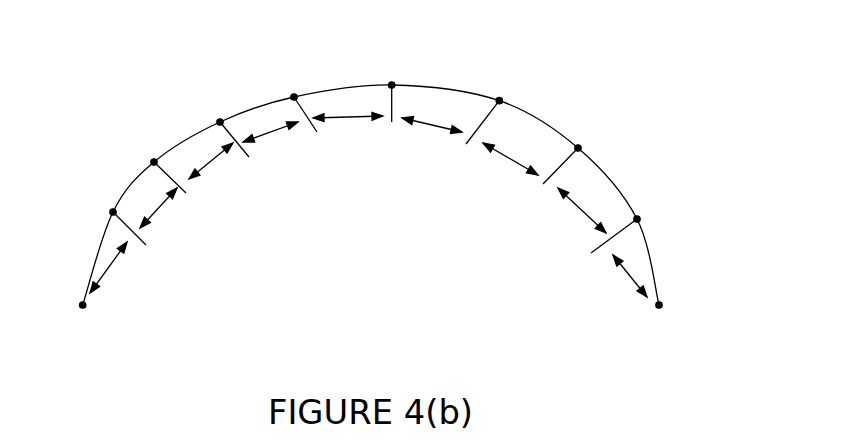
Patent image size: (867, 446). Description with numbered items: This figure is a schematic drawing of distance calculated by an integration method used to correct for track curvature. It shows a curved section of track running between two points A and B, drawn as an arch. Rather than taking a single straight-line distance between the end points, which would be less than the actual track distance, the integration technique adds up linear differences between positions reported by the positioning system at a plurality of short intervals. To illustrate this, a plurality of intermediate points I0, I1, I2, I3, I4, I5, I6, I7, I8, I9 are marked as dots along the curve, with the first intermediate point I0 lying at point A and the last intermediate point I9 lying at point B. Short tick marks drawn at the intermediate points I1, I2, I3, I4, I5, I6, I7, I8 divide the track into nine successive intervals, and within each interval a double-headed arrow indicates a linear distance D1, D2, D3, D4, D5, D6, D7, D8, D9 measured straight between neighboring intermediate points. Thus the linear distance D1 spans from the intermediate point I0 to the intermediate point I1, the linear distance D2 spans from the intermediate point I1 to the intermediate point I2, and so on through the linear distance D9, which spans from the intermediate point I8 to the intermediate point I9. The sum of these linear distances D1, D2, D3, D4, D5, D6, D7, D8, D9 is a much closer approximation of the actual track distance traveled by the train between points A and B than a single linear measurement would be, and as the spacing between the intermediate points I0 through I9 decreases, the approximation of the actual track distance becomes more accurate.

The intermediate point I0 is at (74, 293).
The intermediate point I1 is at (119, 211).
The intermediate point I2 is at (163, 160).
The intermediate point I3 is at (226, 122).
The intermediate point I4 is at (297, 98).
The intermediate point I5 is at (398, 87).
The intermediate point I6 is at (492, 107).
The intermediate point I7 is at (570, 152).
The intermediate point I8 is at (625, 221).
The intermediate point I9 is at (669, 302).
The point A is at (74, 330).
The point B is at (664, 330).
The linear distance D1 is at (116, 268).
The linear distance D2 is at (163, 214).
The linear distance D3 is at (213, 169).
The linear distance D4 is at (271, 145).
The linear distance D5 is at (348, 135).
The linear distance D6 is at (432, 140).
The linear distance D7 is at (510, 168).
The linear distance D8 is at (582, 214).
The linear distance D9 is at (627, 277).